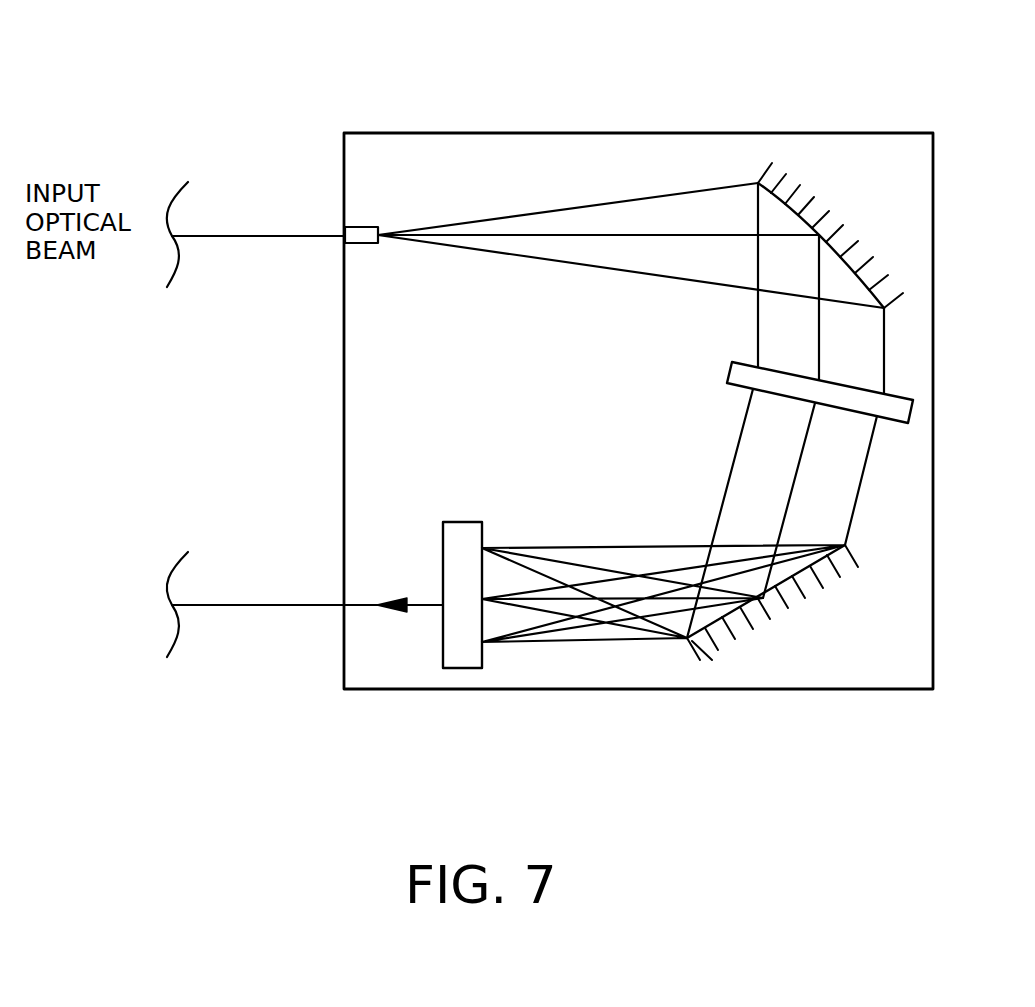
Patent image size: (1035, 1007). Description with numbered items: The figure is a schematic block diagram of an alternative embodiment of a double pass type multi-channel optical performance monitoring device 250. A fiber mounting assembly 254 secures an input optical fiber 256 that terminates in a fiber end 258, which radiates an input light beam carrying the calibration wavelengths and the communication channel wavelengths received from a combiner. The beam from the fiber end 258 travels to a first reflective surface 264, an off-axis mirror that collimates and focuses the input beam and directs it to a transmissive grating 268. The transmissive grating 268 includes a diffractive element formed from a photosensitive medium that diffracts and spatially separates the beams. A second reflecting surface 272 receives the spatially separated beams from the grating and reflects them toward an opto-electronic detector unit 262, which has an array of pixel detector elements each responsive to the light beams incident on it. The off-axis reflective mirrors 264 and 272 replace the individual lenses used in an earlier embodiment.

The double pass type multi-channel optical performance monitoring device 250 is at (891, 110).
The fiber mounting assembly 254 is at (363, 227).
The input optical fiber 256 is at (258, 235).
The fiber end 258 is at (378, 240).
The opto-electronic detector unit 262 is at (465, 537).
The first reflective surface 264 is at (802, 192).
The transmissive grating 268 is at (745, 373).
The second reflecting surface 272 is at (800, 595).